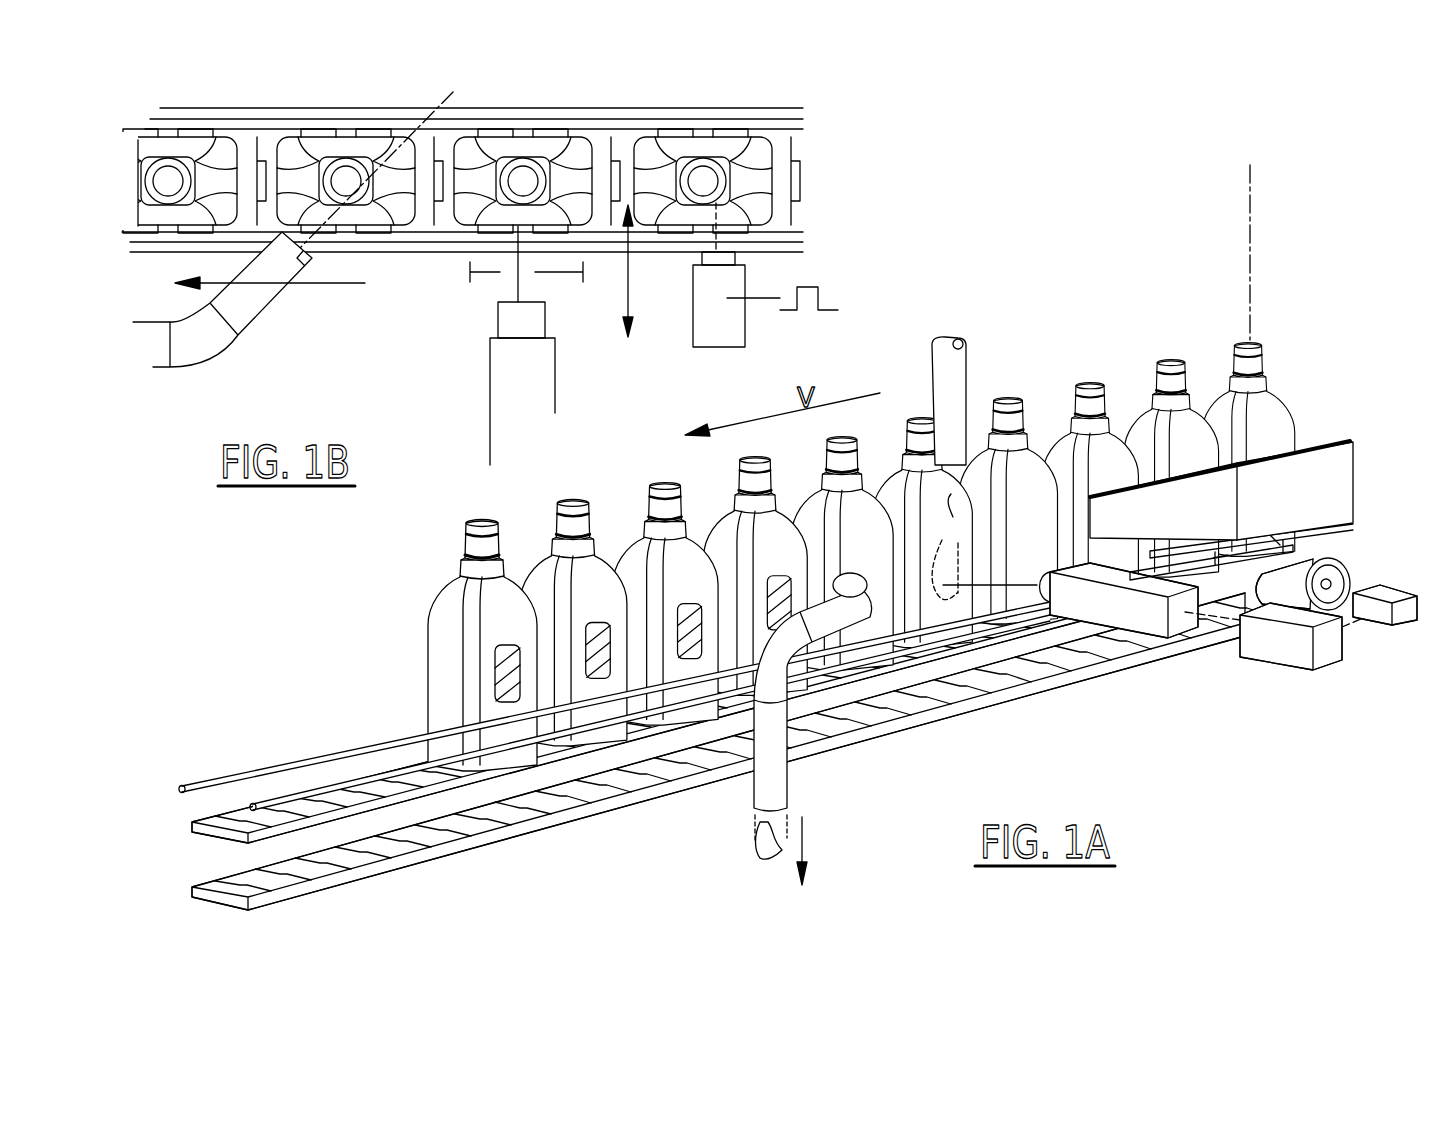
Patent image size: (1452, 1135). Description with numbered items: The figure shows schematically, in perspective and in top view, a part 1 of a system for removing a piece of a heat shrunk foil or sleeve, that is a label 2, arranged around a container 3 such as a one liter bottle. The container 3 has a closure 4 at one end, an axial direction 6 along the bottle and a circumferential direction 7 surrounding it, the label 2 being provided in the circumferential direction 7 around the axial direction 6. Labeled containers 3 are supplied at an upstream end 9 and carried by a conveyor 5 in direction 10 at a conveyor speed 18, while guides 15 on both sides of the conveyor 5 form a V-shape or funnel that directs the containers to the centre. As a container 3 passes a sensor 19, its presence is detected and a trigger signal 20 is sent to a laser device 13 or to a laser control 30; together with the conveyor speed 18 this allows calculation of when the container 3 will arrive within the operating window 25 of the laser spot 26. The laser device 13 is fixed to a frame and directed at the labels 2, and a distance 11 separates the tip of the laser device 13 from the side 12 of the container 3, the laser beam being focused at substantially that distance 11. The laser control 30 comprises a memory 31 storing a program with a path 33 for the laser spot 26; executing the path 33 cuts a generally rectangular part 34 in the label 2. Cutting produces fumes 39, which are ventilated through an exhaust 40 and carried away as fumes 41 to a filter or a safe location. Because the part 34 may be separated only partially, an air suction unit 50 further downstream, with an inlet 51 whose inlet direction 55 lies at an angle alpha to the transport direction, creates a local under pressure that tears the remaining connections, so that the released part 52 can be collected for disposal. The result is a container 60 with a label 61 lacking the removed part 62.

In FIG. 1A, the system 1 is at (1104, 242).
In FIG. 1A, the label 2 is at (1280, 423).
In FIG. 1A, the container 3 is at (1117, 380).
In FIG. 1A, the closure 4 is at (1093, 386).
In FIG. 1A, the conveyor 5 is at (1050, 686).
In FIG. 1A, the axial direction 6 is at (1252, 243).
In FIG. 1A, the circumferential direction 7 is at (1265, 328).
In FIG. 1A, the upstream end 9 is at (1341, 558).
In FIG. 1A, the direction 10 is at (1332, 430).
In FIG. 1B, the distance 11 is at (632, 296).
In FIG. 1B, the side of container 12 is at (563, 226).
In FIG. 1B, the laser device 13 is at (470, 395).
In FIG. 1A, the laser device 13 is at (1148, 628).
In FIG. 1A, the guides 15 is at (1260, 503).
In FIG. 1B, the conveyor speed 18 is at (338, 286).
In FIG. 1A, the conveyor speed 18 is at (806, 416).
In FIG. 1B, the sensor 19 is at (730, 325).
In FIG. 1B, the trigger signal 20 is at (826, 300).
In FIG. 1B, the operating window 25 is at (470, 282).
In FIG. 1A, the laser spot 26 is at (940, 588).
In FIG. 1A, the laser control 30 is at (1290, 655).
In FIG. 1A, the memory 31 is at (1385, 628).
In FIG. 1A, the path 33 is at (958, 544).
In FIG. 1A, the part 34 is at (850, 580).
In FIG. 1A, the fumes 39 is at (950, 500).
In FIG. 1A, the exhaust 40 is at (968, 372).
In FIG. 1A, the fumes 41 is at (955, 338).
In FIG. 1A, the air suction unit 50 is at (837, 627).
In FIG. 1B, the inlet 51 is at (320, 247).
In FIG. 1A, the part 52 is at (760, 853).
In FIG. 1B, the inlet direction 55 is at (444, 98).
In FIG. 1A, the container 60 is at (466, 563).
In FIG. 1A, the label 61 is at (503, 586).
In FIG. 1A, the part 62 is at (503, 676).